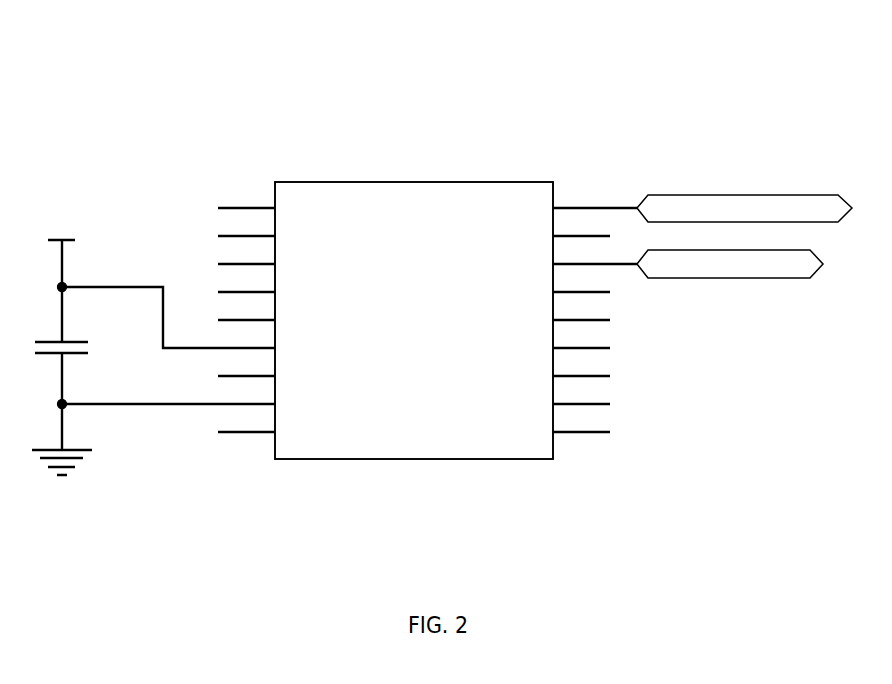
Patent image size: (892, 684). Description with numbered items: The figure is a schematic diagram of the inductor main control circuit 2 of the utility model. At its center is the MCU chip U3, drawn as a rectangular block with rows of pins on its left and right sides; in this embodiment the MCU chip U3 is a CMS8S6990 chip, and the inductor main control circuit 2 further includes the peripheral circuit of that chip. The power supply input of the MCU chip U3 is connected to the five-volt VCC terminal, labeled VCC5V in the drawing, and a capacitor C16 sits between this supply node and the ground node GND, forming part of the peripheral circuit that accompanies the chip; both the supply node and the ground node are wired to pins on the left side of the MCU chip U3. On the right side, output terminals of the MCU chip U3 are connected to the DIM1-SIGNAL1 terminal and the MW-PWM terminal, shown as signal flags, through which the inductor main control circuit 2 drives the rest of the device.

The inductor main control circuit 2 is at (453, 162).
The MCU chip U3 is at (414, 309).
The capacitor C16 is at (81, 345).
The 5V supply VCC5V is at (59, 252).
The ground GND is at (62, 455).